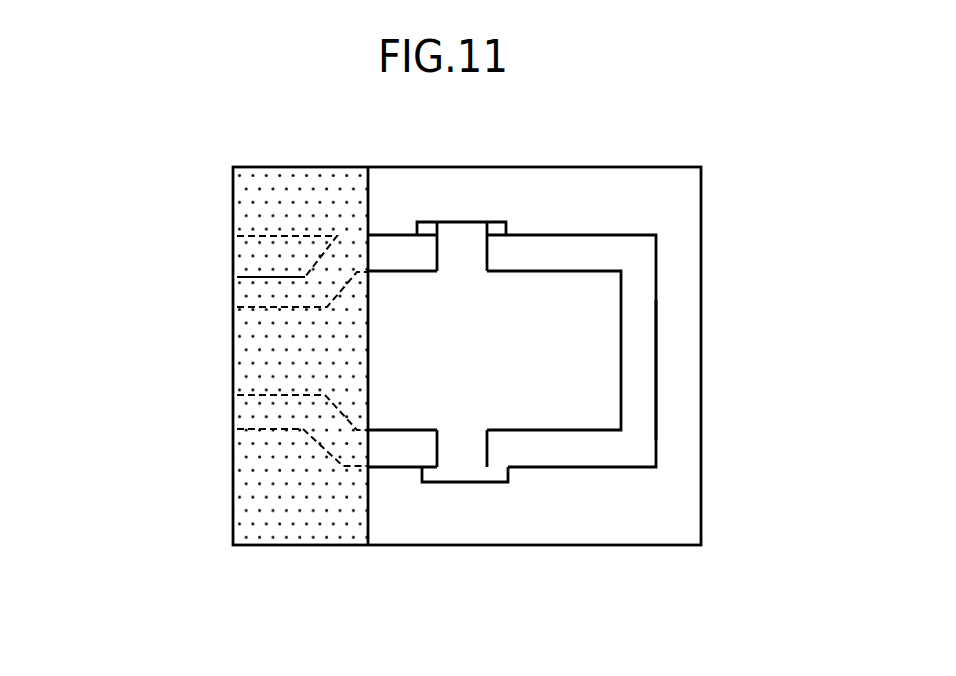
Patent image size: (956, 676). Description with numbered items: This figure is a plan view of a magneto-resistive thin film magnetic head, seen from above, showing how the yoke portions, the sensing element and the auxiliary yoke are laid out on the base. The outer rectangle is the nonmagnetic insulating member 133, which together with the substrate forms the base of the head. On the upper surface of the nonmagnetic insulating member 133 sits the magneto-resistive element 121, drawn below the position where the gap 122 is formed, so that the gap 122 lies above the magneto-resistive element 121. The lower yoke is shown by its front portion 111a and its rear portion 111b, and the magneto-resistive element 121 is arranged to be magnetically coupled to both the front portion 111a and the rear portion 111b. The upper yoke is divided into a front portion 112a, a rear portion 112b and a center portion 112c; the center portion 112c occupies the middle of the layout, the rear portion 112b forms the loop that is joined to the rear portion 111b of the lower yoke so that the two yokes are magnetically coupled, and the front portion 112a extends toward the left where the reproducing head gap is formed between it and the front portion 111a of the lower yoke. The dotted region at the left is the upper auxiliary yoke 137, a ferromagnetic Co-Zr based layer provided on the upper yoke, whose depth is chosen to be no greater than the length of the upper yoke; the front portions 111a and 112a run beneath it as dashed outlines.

The front portion of the lower yoke 111a is at (237, 413).
The rear portion of the lower yoke 111b is at (636, 438).
The front portion of the upper yoke 112a is at (240, 360).
The rear portion of the upper yoke 112b is at (598, 313).
The center portion of the upper yoke 112c is at (545, 400).
The magneto-resistive element 121 is at (465, 468).
The gap 122 is at (467, 243).
The nonmagnetic insulating member 133 is at (680, 443).
The upper auxiliary yoke 137 is at (262, 248).